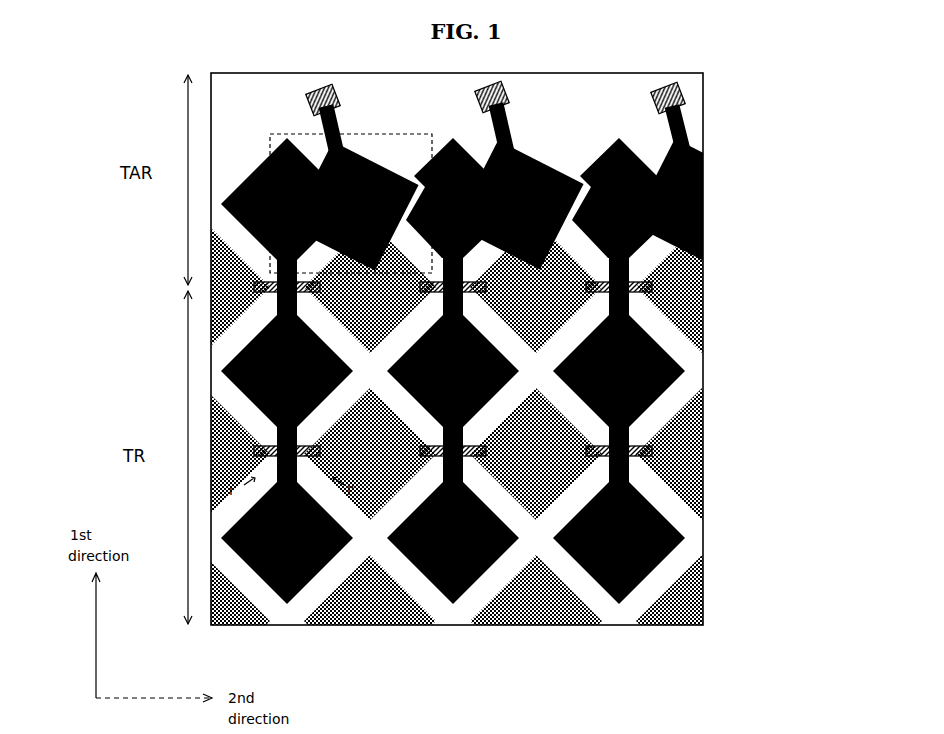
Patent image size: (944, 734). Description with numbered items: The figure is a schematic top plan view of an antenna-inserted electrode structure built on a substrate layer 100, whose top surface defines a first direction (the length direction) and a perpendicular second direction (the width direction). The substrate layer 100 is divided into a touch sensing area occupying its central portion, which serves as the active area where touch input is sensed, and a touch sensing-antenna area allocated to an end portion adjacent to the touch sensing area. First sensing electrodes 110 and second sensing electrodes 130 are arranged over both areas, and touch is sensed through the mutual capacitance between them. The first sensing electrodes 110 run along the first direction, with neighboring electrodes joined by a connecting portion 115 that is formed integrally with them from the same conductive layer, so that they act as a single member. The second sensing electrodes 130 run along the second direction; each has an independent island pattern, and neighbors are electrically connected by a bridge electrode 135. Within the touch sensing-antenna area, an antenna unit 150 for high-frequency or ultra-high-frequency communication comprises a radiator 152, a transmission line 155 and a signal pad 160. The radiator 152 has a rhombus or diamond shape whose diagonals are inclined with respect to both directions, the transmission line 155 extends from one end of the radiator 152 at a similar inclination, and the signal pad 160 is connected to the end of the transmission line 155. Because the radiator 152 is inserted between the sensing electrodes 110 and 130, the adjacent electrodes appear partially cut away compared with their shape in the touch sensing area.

The substrate layer 100 is at (612, 606).
The first sensing electrodes 110 is at (668, 540).
The connecting portion 115 is at (608, 455).
The second sensing electrodes 130 is at (642, 449).
The bridge electrode 135 is at (620, 435).
The antenna unit 150 is at (578, 174).
The radiator 152 is at (697, 205).
The transmission line 155 is at (684, 113).
The signal pad 160 is at (678, 85).